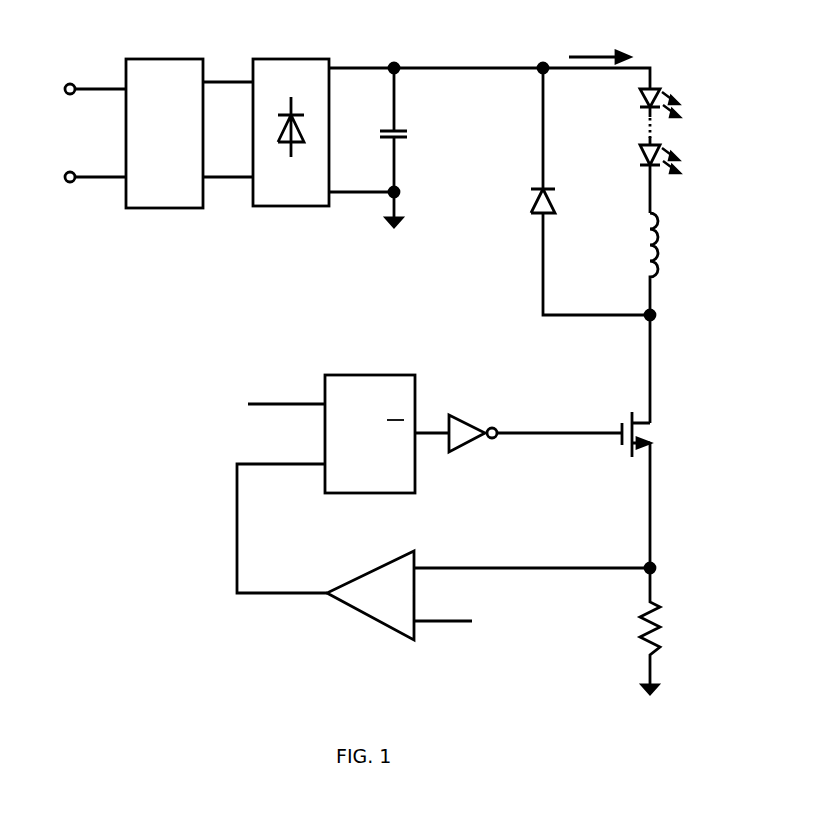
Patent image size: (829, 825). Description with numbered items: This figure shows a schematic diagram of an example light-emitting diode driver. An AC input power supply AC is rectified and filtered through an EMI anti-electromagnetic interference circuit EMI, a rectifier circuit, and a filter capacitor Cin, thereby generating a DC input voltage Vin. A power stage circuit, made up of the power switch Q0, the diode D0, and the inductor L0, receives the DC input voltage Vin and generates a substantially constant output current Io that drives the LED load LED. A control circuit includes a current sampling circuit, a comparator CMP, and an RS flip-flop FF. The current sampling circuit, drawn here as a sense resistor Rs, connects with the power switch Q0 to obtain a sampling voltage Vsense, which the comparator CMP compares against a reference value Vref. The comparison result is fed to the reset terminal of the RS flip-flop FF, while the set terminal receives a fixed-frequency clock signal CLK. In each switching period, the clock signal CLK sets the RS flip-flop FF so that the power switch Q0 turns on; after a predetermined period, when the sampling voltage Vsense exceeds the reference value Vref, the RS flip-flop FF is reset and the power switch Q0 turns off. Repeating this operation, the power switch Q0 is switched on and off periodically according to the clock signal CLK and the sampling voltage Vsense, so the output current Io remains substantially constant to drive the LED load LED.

The AC input power supply AC is at (82, 133).
The EMI anti-electromagnetic interference circuit EMI is at (164, 133).
The filter capacitor Cin is at (412, 147).
The DC input voltage Vin is at (450, 50).
The output current Io is at (599, 46).
The LED load LED is at (660, 151).
The diode D0 is at (571, 191).
The inductor L0 is at (670, 318).
The RS flip-flop FF is at (387, 434).
The clock signal CLK is at (259, 405).
The power switch Q0 is at (653, 490).
The comparator CMP is at (370, 595).
The sampling voltage Vsense is at (532, 556).
The reference value Vref is at (462, 622).
The sense resistor Rs is at (661, 631).